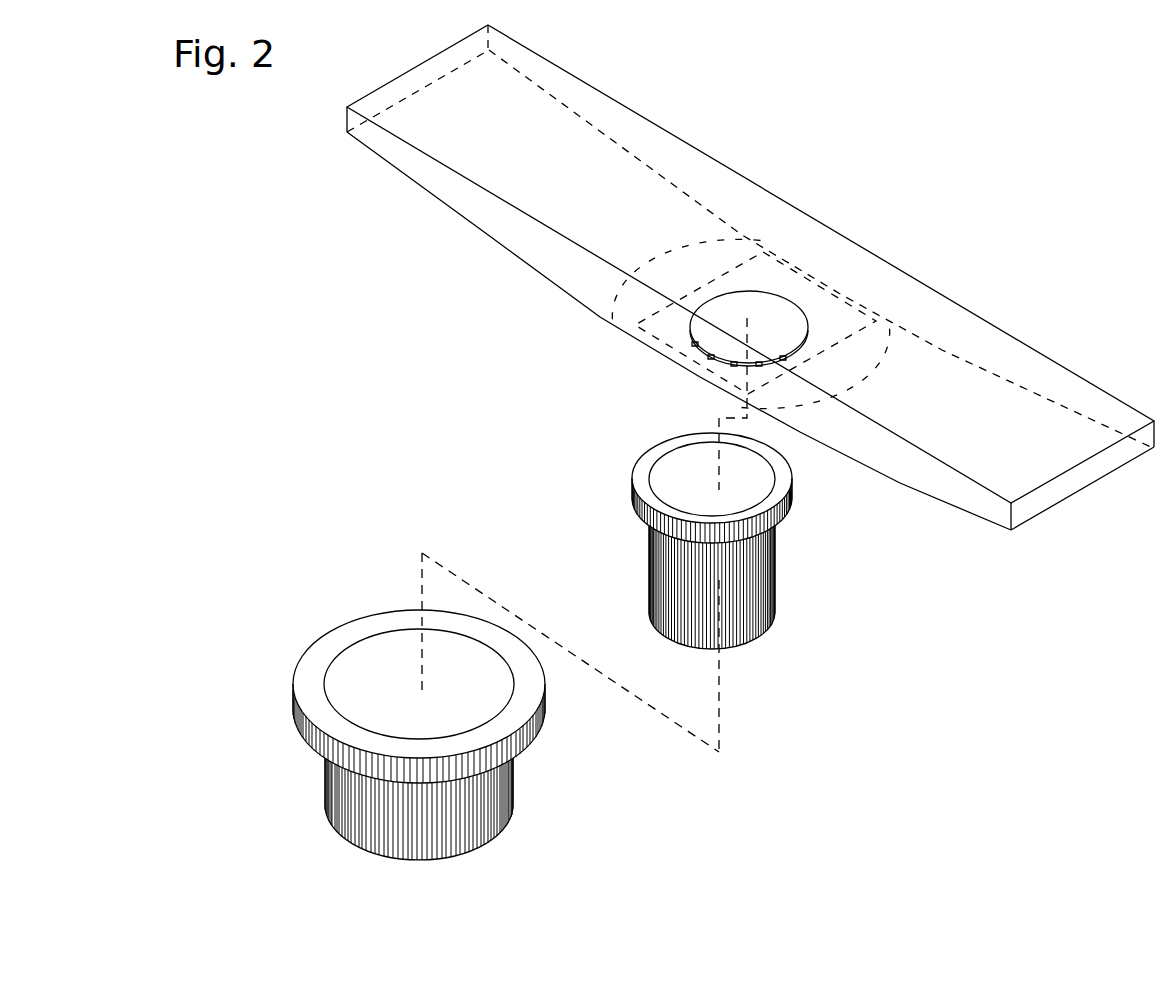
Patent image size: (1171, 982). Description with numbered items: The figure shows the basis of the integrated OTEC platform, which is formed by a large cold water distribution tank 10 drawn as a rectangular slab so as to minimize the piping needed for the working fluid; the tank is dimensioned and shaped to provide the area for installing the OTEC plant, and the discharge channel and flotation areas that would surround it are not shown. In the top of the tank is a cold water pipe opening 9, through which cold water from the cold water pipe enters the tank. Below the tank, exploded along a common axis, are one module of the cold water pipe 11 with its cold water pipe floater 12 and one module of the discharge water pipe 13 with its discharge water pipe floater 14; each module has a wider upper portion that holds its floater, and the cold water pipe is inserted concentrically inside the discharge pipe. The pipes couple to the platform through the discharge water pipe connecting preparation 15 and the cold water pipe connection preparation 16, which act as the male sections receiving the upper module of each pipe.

The cold water pipe opening 9 is at (753, 328).
The cold water distribution tank 10 is at (542, 172).
The cold water pipe 11 is at (778, 600).
The cold water pipe floater 12 is at (790, 510).
The discharge water pipe 13 is at (513, 805).
The discharge water pipe floater 14 is at (545, 720).
The discharge water pipe connecting preparation 15 is at (695, 248).
The cold water pipe connection preparation 16 is at (800, 348).